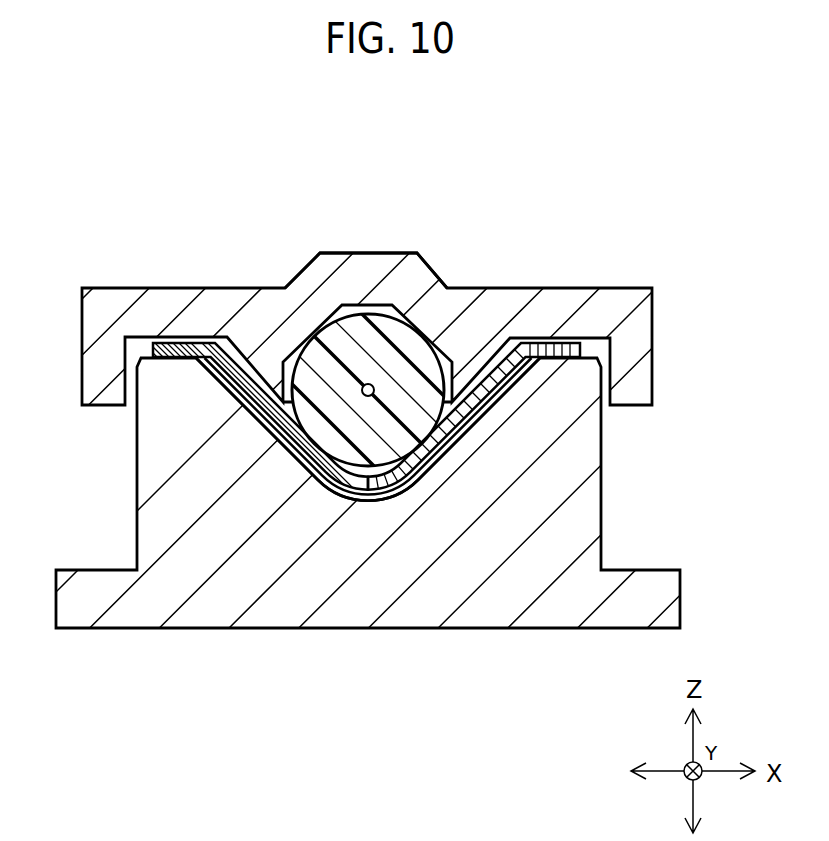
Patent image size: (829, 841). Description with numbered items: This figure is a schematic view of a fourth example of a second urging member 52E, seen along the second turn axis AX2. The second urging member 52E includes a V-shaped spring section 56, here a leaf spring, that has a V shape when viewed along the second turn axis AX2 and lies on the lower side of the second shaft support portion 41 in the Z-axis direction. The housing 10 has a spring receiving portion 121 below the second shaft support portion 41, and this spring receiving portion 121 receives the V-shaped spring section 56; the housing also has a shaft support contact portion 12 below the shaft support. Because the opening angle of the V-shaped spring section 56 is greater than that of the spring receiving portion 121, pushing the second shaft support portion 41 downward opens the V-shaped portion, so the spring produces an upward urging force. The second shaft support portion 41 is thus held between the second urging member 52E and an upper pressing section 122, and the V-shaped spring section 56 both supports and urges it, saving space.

The housing 10 is at (173, 518).
The shaft support contact portion 12 is at (375, 319).
The spring receiving portion 121 is at (268, 420).
The upper pressing section 122 is at (436, 304).
The second shaft support portion 41 is at (360, 442).
The second turn axis AX2 is at (361, 390).
The V-shaped spring section 56 is at (440, 434).
The second urging member 52E is at (443, 445).